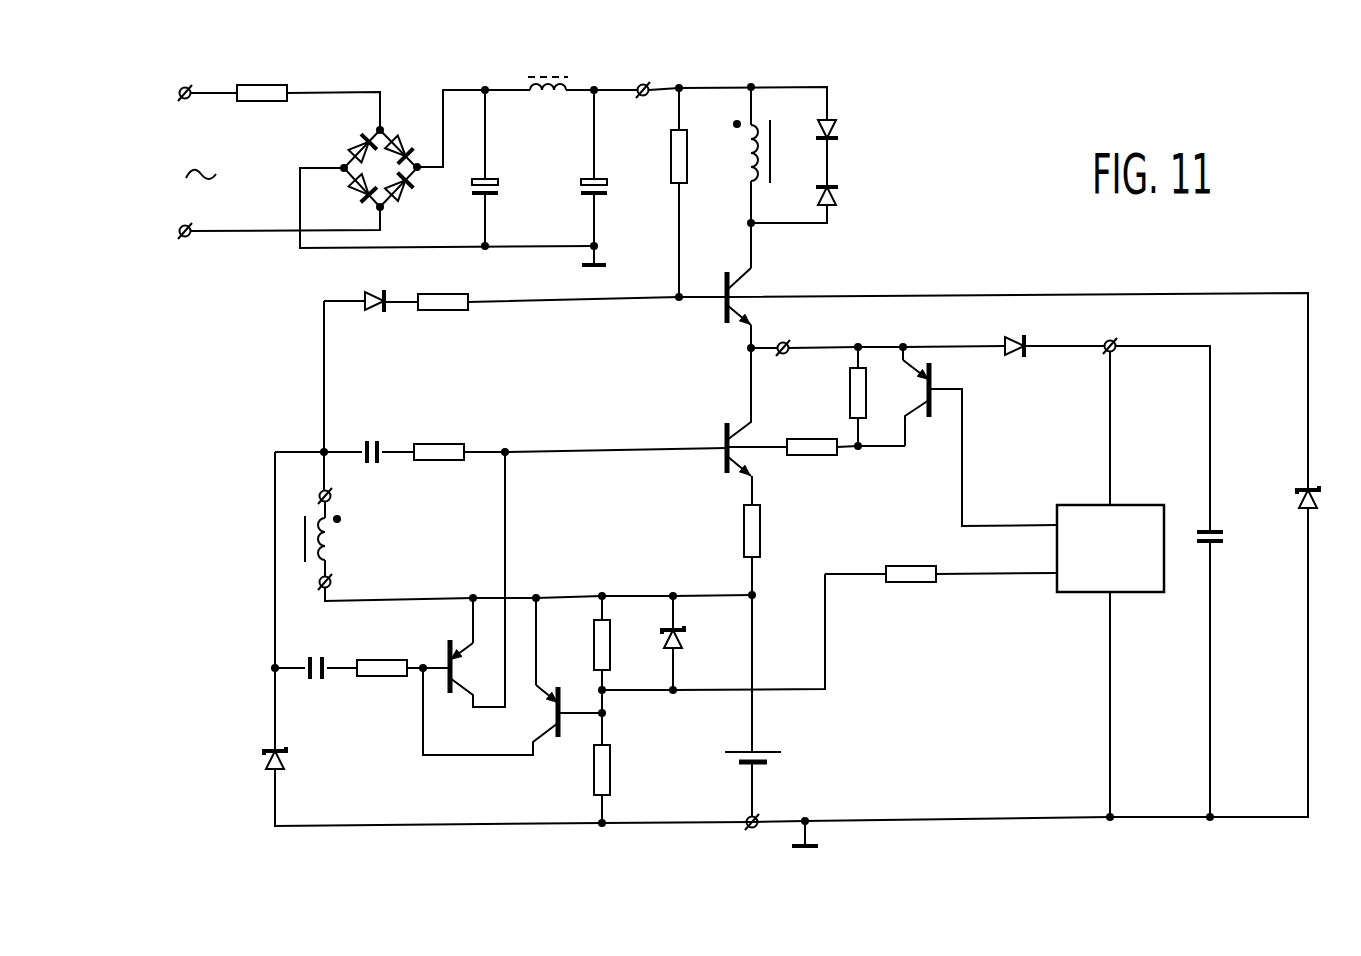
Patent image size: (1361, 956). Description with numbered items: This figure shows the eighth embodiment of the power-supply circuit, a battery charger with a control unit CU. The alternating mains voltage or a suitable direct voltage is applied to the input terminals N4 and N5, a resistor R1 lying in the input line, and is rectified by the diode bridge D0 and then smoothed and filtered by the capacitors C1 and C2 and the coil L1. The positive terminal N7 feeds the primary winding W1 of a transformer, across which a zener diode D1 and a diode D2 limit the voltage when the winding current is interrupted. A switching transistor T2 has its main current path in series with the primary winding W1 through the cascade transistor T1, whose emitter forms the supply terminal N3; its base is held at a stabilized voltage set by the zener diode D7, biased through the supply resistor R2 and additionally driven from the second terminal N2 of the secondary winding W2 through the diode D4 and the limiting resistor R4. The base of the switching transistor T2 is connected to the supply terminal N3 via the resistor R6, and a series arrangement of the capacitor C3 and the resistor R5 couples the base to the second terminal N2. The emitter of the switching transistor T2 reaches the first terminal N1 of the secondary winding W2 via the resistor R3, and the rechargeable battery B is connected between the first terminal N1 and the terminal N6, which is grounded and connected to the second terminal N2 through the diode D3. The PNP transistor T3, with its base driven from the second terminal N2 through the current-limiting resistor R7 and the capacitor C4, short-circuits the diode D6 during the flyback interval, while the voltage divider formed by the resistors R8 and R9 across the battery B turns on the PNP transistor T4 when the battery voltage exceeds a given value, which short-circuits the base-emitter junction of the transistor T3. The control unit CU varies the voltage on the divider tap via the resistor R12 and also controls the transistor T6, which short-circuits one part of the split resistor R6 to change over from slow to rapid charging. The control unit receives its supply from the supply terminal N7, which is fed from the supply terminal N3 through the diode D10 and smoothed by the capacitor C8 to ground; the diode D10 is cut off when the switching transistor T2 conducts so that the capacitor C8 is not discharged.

The input terminal N4 is at (206, 109).
The resistor R1 is at (262, 109).
The input terminal N5 is at (186, 245).
The diode bridge D0 is at (380, 168).
The capacitor C1 is at (497, 168).
The capacitor C2 is at (605, 168).
The coil L1 is at (548, 96).
The positive terminal N7 is at (881, 218).
The supply resistor R2 is at (692, 135).
The primary winding W1 is at (773, 135).
The zener diode D1 is at (841, 126).
The diode D2 is at (841, 191).
The cascade transistor T1 is at (753, 306).
The supply terminal N3 is at (789, 332).
The resistor R6 is at (828, 414).
The transistor T6 is at (976, 436).
The diode D10 is at (1018, 361).
The switching transistor T2 is at (725, 412).
The resistor R3 is at (764, 531).
The resistor R12 is at (911, 560).
The control unit CU is at (1110, 530).
The smoothing capacitor C8 is at (1225, 527).
The zener diode D7 is at (1295, 488).
The diode D4 is at (369, 317).
The limiting resistor R4 is at (443, 316).
The capacitor C3 is at (372, 435).
The resistor R5 is at (439, 434).
The second terminal N2 is at (312, 489).
The secondary winding W2 is at (333, 539).
The first terminal N1 is at (312, 588).
The current-limiting resistor R7 is at (382, 652).
The smoothing capacitor C4 is at (308, 684).
The diode D3 is at (289, 758).
The PNP transistor T3 is at (477, 579).
The PNP transistor T4 is at (512, 676).
The resistor R8 is at (615, 633).
The diode D6 is at (689, 633).
The resistor R9 is at (615, 770).
The rechargeable battery B is at (744, 765).
The terminal N6 is at (765, 806).